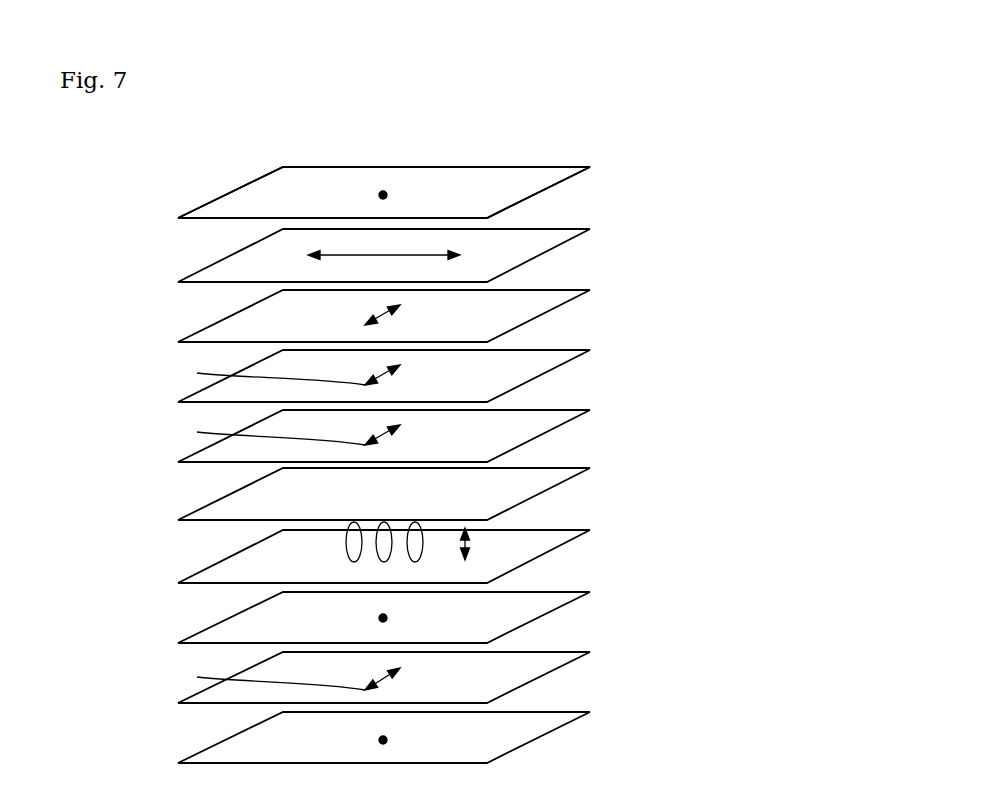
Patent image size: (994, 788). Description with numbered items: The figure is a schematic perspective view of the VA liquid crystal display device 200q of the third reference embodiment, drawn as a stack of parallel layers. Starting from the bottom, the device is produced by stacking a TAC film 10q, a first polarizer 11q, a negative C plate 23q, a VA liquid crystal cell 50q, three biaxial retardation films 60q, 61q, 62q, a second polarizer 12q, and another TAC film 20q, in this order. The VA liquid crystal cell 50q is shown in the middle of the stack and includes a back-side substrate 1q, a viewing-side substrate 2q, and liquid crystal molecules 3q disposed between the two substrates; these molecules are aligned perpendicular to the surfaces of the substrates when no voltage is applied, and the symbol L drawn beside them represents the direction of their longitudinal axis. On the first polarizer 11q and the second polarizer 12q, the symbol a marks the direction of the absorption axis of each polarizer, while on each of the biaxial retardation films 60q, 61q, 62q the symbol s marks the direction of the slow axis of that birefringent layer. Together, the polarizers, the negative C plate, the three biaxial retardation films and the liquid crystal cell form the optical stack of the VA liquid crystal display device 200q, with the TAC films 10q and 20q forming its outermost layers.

The VA liquid crystal display device 200q is at (643, 135).
The TAC film 20q is at (527, 188).
The second polarizer 12q is at (400, 257).
The biaxial retardation film 62q is at (400, 320).
The biaxial retardation film 61q is at (527, 372).
The biaxial retardation film 60q is at (527, 430).
The VA liquid crystal cell 50q is at (397, 524).
The viewing-side substrate 2q is at (232, 503).
The back-side substrate 1q is at (222, 568).
The liquid crystal molecules 3q is at (352, 547).
The longitudinal axis direction of the liquid crystal molecules L is at (472, 540).
The negative C plate 23q is at (527, 613).
The first polarizer 11q is at (527, 675).
The TAC film 10q is at (527, 735).
The absorption axis direction a is at (306, 254).
The slow axis direction s is at (365, 325).